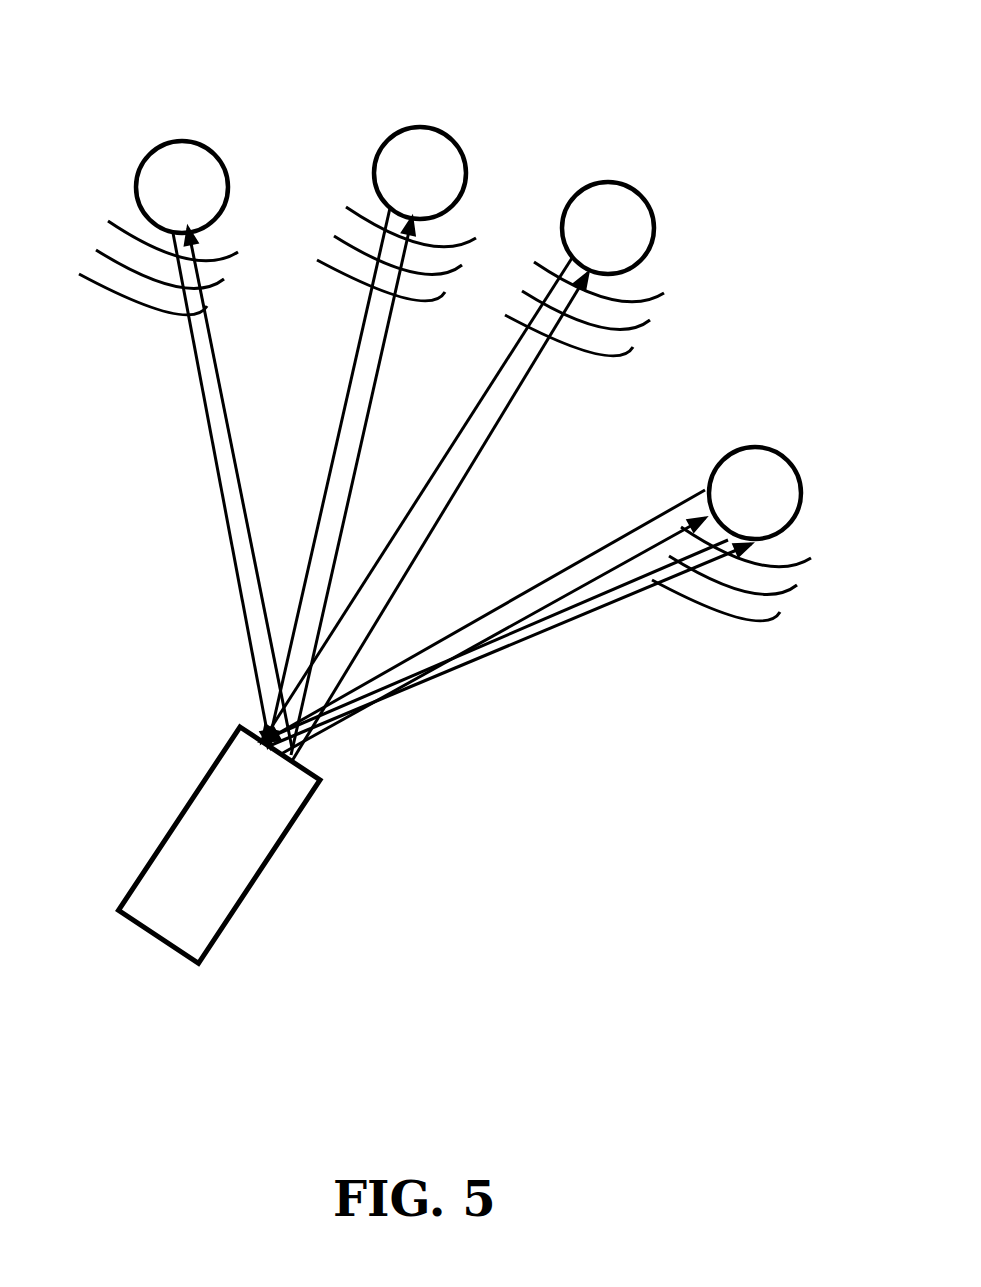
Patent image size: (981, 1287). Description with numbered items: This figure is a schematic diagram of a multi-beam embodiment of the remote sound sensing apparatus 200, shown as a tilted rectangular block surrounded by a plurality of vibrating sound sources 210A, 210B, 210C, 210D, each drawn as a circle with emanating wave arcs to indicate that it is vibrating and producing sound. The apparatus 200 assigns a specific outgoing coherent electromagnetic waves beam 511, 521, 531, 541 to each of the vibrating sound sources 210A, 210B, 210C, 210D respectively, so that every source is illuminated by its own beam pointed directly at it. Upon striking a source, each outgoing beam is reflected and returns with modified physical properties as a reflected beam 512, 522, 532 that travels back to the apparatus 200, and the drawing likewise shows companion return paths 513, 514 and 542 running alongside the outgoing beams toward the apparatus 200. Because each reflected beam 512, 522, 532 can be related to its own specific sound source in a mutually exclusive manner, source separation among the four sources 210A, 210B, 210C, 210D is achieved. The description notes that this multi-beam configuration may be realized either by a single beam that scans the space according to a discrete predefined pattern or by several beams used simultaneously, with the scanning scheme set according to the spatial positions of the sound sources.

The remote sound sensing apparatus 200 is at (188, 797).
The vibrating sound source 210A is at (748, 447).
The vibrating sound source 210B is at (602, 182).
The vibrating sound source 210C is at (414, 127).
The vibrating sound source 210D is at (178, 141).
The outgoing coherent electromagnetic waves beam 511 is at (553, 630).
The reflected beam 512 is at (620, 588).
The transmitted signal to node A 513 is at (653, 547).
The received signal from node A 514 is at (587, 555).
The outgoing coherent electromagnetic waves beam 521 is at (520, 390).
The reflected beam 522 is at (484, 396).
The outgoing coherent electromagnetic waves beam 531 is at (371, 400).
The reflected beam 532 is at (323, 515).
The outgoing coherent electromagnetic waves beam 541 is at (228, 410).
The received signal from node D 542 is at (211, 437).